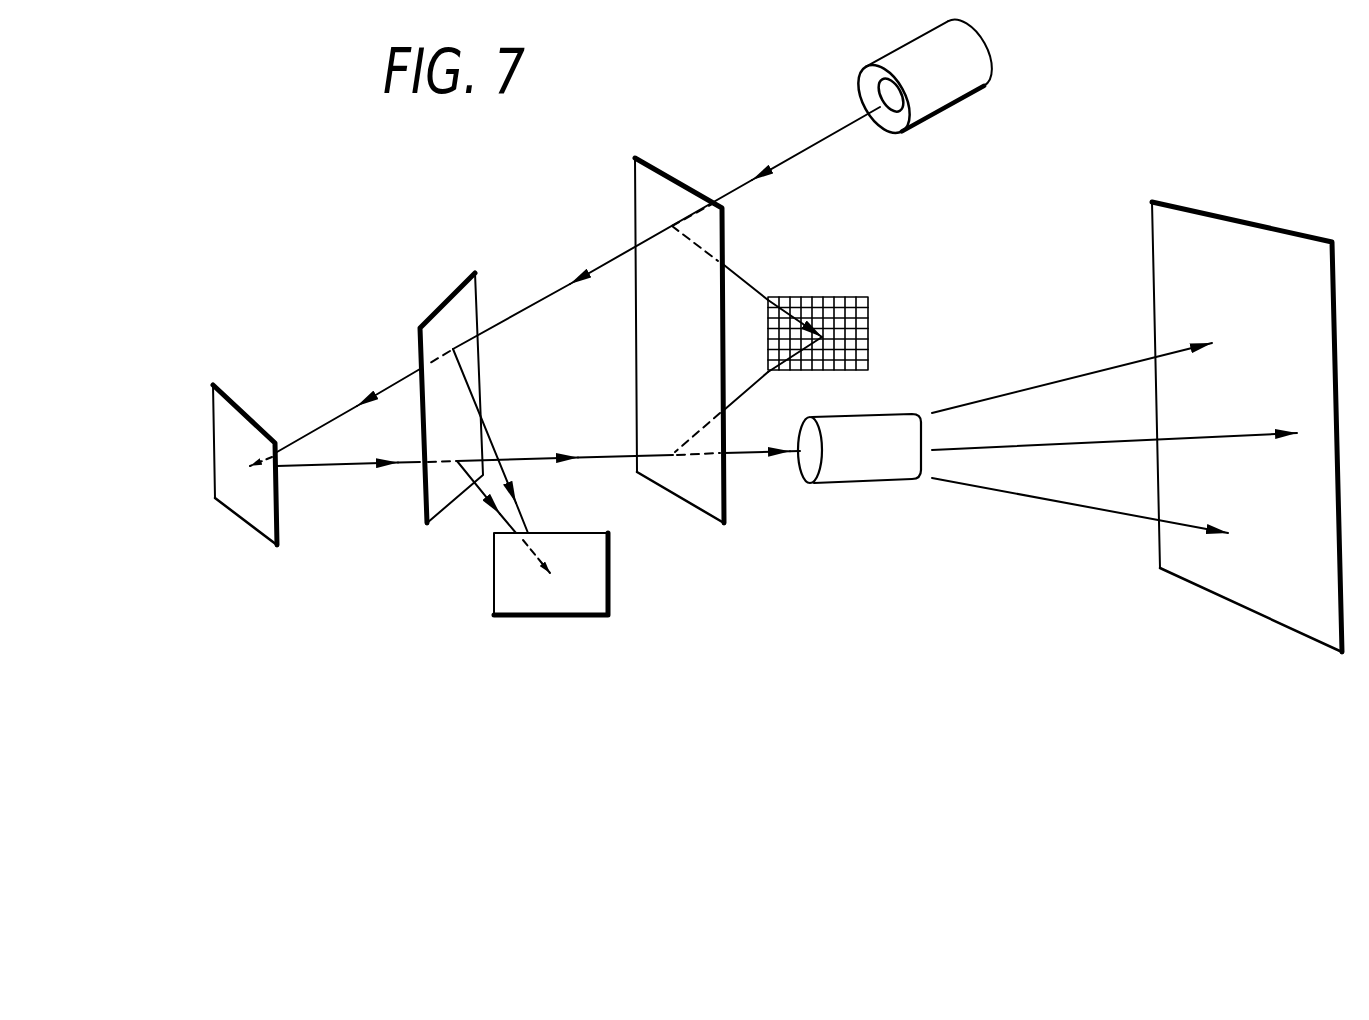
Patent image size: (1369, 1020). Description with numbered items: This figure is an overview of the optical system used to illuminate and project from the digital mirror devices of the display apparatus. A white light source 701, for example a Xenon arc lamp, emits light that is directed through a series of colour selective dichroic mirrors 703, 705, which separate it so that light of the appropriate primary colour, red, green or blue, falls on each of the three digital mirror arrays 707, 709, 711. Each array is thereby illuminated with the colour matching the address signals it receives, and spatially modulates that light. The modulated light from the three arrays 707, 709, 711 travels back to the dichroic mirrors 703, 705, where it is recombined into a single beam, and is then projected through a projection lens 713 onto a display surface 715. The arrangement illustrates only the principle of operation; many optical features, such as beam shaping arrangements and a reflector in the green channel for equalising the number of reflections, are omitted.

The white light source 701 is at (983, 68).
The dichroic mirror 703 is at (633, 182).
The dichroic mirror 705 is at (478, 293).
The digital mirror array 707 is at (863, 322).
The digital mirror array 709 is at (232, 400).
The digital mirror array 711 is at (608, 578).
The projection lens 713 is at (855, 415).
The display surface 715 is at (1227, 215).